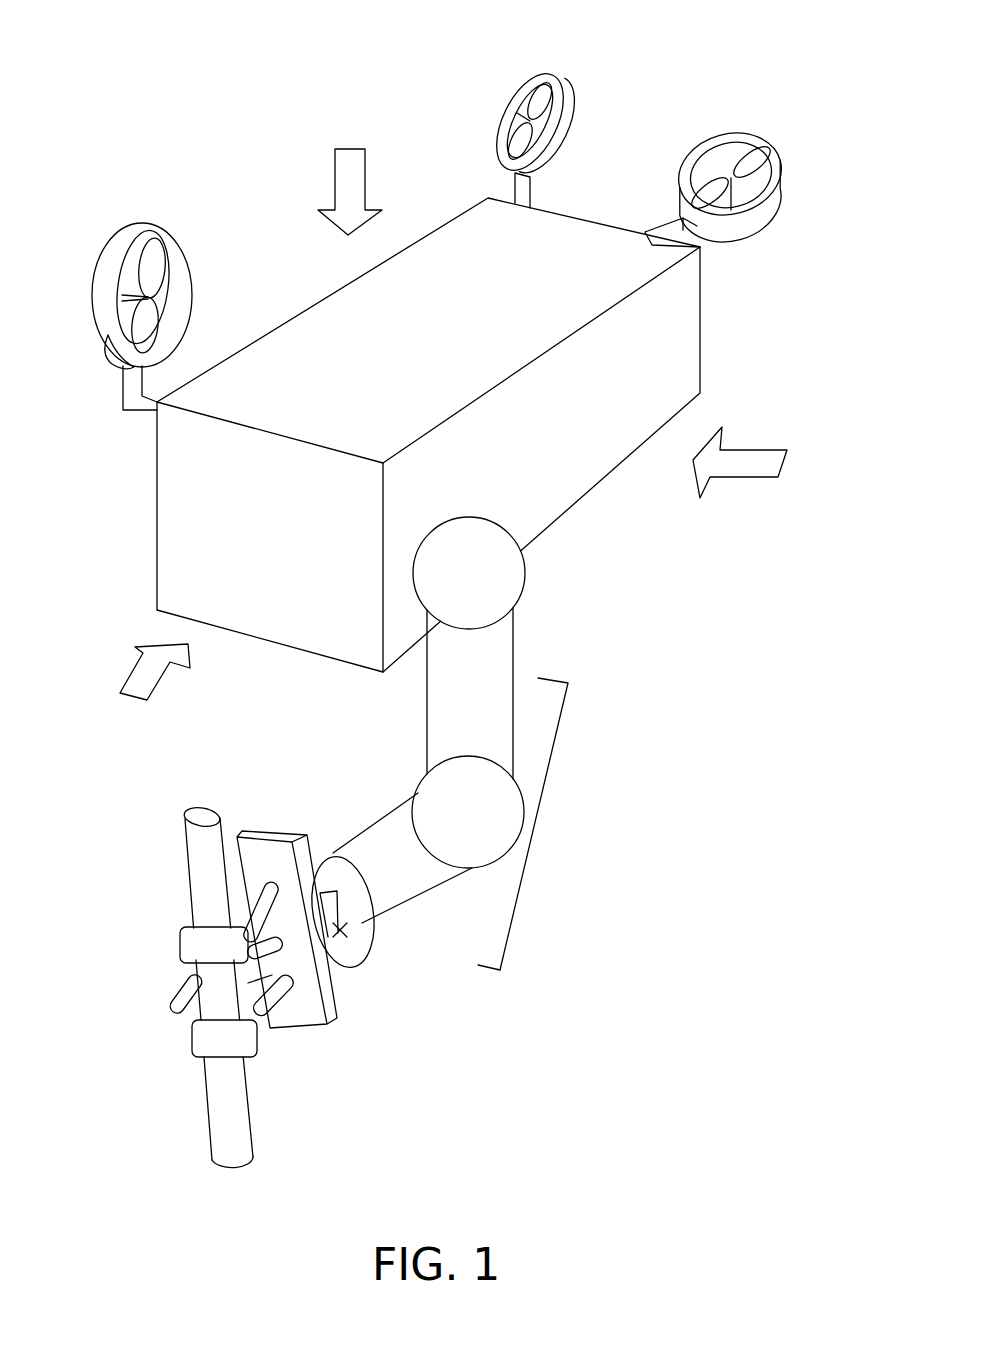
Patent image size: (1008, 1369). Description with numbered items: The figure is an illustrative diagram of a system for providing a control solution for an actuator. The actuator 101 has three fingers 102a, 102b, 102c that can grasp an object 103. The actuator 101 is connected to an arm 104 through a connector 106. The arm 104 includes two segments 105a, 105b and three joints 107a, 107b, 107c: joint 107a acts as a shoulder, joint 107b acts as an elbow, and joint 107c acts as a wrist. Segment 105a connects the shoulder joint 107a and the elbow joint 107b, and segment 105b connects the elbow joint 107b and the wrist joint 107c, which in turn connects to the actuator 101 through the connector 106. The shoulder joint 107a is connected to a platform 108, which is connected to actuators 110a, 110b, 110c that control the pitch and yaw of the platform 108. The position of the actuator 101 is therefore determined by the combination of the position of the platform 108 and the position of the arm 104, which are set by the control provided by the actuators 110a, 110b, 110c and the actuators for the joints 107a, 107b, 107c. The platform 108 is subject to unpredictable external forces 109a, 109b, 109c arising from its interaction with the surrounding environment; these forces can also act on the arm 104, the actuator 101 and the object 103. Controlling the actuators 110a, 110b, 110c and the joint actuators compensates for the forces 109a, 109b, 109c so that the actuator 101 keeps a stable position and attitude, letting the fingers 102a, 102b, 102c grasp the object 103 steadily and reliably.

The actuator 101 is at (340, 1006).
The finger 102a is at (182, 933).
The finger 102b is at (165, 1010).
The finger 102c is at (190, 1045).
The object 103 is at (235, 1148).
The arm 104 is at (548, 785).
The segment 105a is at (445, 690).
The segment 105b is at (388, 848).
The connector 106 is at (355, 959).
The shoulder joint 107a is at (505, 587).
The elbow joint 107b is at (496, 830).
The wrist joint 107c is at (360, 926).
The platform 108 is at (297, 630).
The external force 109a is at (333, 172).
The external force 109b is at (747, 448).
The external force 109c is at (128, 682).
The actuator 110a is at (775, 152).
The actuator 110b is at (579, 96).
The actuator 110c is at (133, 224).